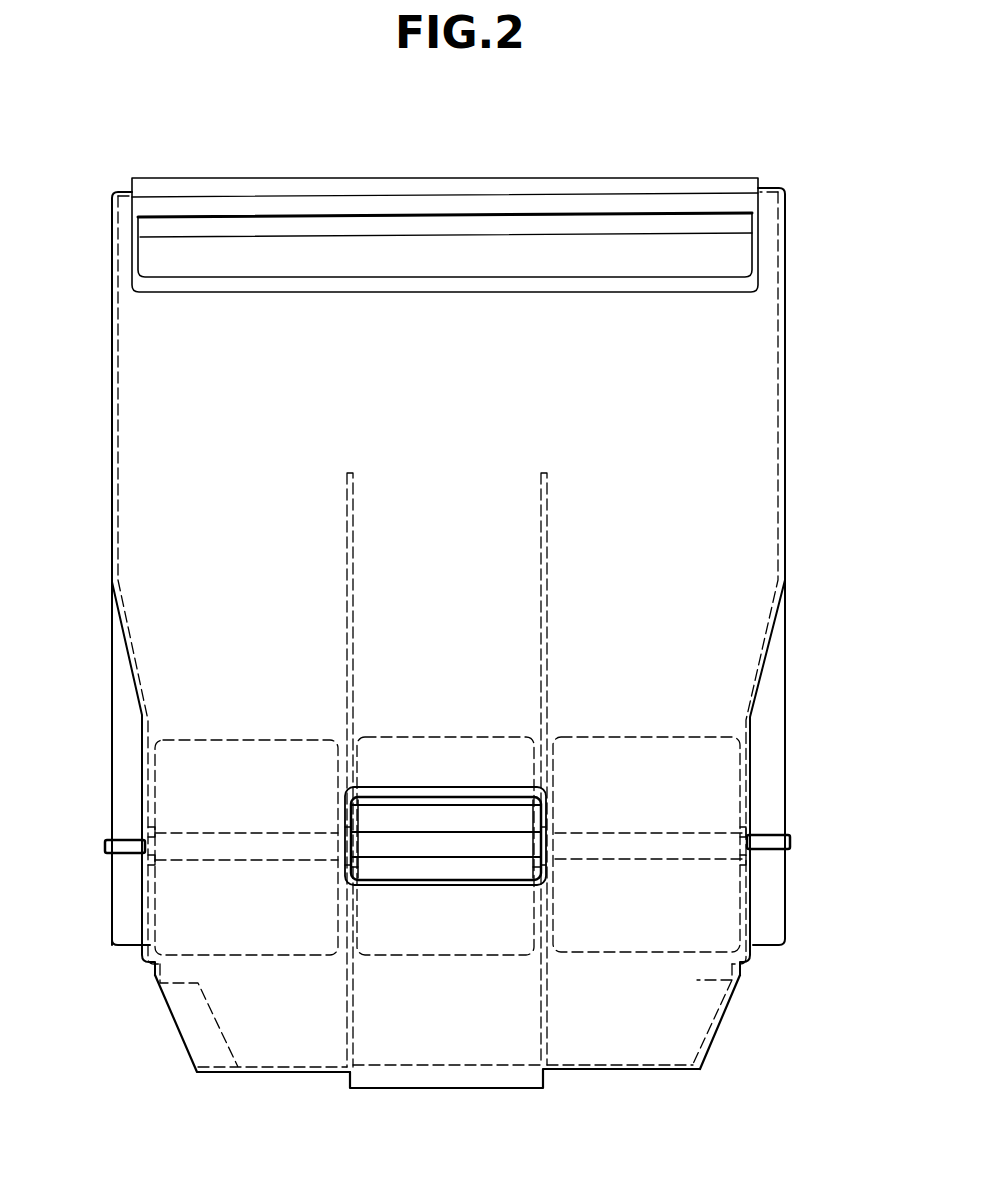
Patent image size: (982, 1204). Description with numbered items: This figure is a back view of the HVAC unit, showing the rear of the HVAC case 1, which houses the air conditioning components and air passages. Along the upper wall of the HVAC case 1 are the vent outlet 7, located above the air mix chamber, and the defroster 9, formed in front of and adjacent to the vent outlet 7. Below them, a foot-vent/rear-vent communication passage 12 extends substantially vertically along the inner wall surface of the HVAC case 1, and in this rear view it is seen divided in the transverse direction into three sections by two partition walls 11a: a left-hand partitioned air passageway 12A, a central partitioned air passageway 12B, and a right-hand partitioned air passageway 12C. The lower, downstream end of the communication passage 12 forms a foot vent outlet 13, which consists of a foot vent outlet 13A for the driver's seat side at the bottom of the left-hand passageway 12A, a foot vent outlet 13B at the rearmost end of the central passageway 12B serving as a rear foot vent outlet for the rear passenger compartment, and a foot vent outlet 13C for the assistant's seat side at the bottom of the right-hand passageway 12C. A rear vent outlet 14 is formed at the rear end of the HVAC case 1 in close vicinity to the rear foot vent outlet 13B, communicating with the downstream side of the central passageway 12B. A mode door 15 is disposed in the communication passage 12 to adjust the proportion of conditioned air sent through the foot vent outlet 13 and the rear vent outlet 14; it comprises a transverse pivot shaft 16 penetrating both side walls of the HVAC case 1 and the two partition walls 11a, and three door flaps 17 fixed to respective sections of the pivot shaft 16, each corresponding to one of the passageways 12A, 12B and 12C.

The HVAC case 1 is at (794, 298).
The vent outlet 7 is at (520, 246).
The defroster 9 is at (382, 198).
The partition walls 11a is at (353, 533).
The foot-vent/rear-vent communication passage 12 is at (459, 676).
The left-hand partitioned air passageway 12A is at (156, 567).
The central partitioned air passageway 12B is at (472, 488).
The right-hand partitioned air passageway 12C is at (704, 598).
The foot vent outlet 13 is at (443, 1064).
The foot vent outlet 13A is at (190, 1018).
The foot vent outlet 13B is at (453, 1077).
The foot vent outlet 13C is at (698, 1023).
The rear vent outlet 14 is at (452, 872).
The mode door 15 is at (705, 732).
The pivot shaft 16 is at (127, 857).
The door flaps 17 is at (258, 740).